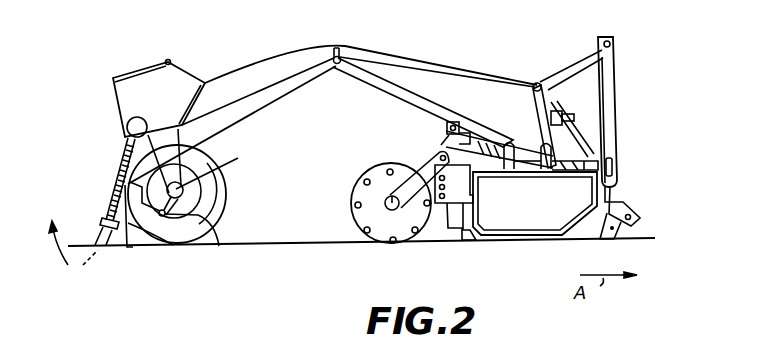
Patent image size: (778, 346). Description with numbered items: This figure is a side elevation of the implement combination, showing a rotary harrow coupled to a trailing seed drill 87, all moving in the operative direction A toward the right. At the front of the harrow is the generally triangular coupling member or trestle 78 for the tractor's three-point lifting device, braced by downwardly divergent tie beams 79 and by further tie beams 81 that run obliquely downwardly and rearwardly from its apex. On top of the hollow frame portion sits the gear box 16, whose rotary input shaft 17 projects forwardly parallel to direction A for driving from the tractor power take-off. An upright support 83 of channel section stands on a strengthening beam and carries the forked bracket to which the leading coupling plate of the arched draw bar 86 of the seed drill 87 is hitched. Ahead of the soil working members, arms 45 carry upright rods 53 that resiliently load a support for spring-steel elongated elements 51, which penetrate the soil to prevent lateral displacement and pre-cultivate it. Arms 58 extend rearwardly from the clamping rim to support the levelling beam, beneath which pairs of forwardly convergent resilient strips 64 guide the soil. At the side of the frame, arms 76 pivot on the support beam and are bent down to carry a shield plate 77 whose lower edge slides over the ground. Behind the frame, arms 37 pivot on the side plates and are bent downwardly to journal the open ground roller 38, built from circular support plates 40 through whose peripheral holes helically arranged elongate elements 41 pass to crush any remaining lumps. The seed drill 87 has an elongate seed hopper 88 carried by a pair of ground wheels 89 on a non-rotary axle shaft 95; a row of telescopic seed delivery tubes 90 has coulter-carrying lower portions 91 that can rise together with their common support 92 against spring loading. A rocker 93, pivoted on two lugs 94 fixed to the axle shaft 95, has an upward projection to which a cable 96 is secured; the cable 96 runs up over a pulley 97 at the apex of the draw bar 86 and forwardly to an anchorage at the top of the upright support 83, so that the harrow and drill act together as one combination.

The gear box 16 is at (537, 105).
The rotary input shaft 17 is at (561, 114).
The arms 37 is at (428, 170).
The open ground roller 38 is at (350, 195).
The support plates 40 is at (353, 215).
The elongate elements 41 is at (367, 178).
The arms 45 is at (626, 203).
The elongated elements 51 is at (603, 235).
The upright rods 53 is at (612, 193).
The arms 58 is at (576, 157).
The resilient strips 64 is at (462, 238).
The arms 76 is at (508, 178).
The shield plate 77 is at (549, 230).
The coupling member or trestle 78 is at (614, 82).
The tie beams 79 is at (604, 117).
The further tie beams 81 is at (597, 50).
The upright support 83 is at (543, 82).
The arched draw bar 86 is at (277, 57).
The seed drill 87 is at (214, 53).
The seed hopper 88 is at (148, 85).
The ground wheels 89 is at (213, 192).
The telescopic seed delivery tubes 90 is at (126, 130).
The lower portions 91 is at (117, 184).
The common support 92 is at (103, 216).
The rocker 93 is at (128, 247).
The lugs 94 is at (215, 244).
The non-rotary axle shaft 95 is at (220, 168).
The cable 96 is at (430, 68).
The pulley 97 is at (337, 66).